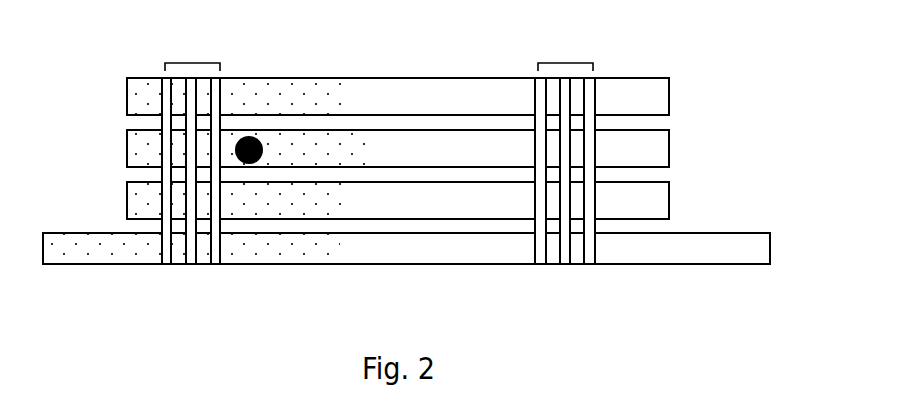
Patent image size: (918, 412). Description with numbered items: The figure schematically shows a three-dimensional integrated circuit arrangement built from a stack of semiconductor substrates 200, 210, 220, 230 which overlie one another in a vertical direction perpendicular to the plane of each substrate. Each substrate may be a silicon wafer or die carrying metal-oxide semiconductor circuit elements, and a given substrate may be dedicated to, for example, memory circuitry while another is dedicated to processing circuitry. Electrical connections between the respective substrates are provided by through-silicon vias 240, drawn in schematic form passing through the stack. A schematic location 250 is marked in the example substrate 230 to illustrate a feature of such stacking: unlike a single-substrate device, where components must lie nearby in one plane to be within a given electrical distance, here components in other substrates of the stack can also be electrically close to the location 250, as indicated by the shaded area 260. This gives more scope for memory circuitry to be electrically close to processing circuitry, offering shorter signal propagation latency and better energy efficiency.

The semiconductor substrate 200 is at (723, 233).
The semiconductor substrate 210 is at (669, 197).
The semiconductor substrate 220 is at (669, 148).
The semiconductor substrate 230 is at (670, 83).
The through-silicon vias 240 is at (188, 60).
The schematic location 250 is at (256, 136).
The shaded area 260 is at (316, 93).